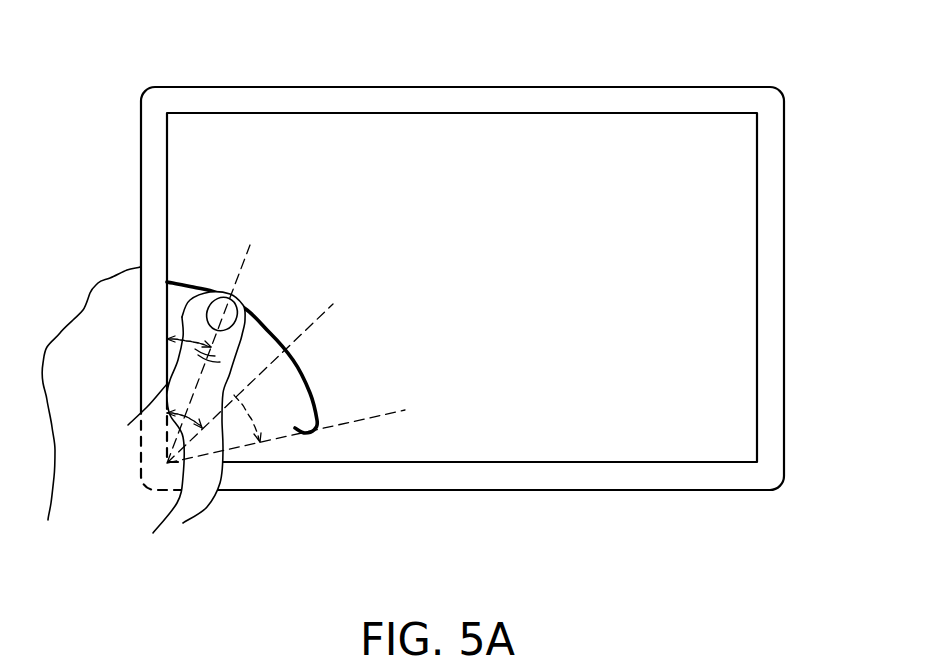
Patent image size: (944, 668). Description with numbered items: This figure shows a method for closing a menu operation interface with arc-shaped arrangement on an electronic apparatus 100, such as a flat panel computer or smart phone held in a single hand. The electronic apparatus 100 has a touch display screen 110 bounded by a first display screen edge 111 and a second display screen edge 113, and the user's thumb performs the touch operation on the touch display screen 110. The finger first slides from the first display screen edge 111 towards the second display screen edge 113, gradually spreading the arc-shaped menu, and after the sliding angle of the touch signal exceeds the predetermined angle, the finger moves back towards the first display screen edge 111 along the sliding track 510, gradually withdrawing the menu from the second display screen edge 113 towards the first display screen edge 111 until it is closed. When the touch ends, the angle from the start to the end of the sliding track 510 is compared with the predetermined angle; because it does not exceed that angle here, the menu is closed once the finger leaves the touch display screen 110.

The electronic apparatus 100 is at (658, 88).
The touch display screen 110 is at (588, 128).
The first display screen edge 111 is at (167, 152).
The second display screen edge 113 is at (417, 462).
The sliding track 510 is at (273, 332).